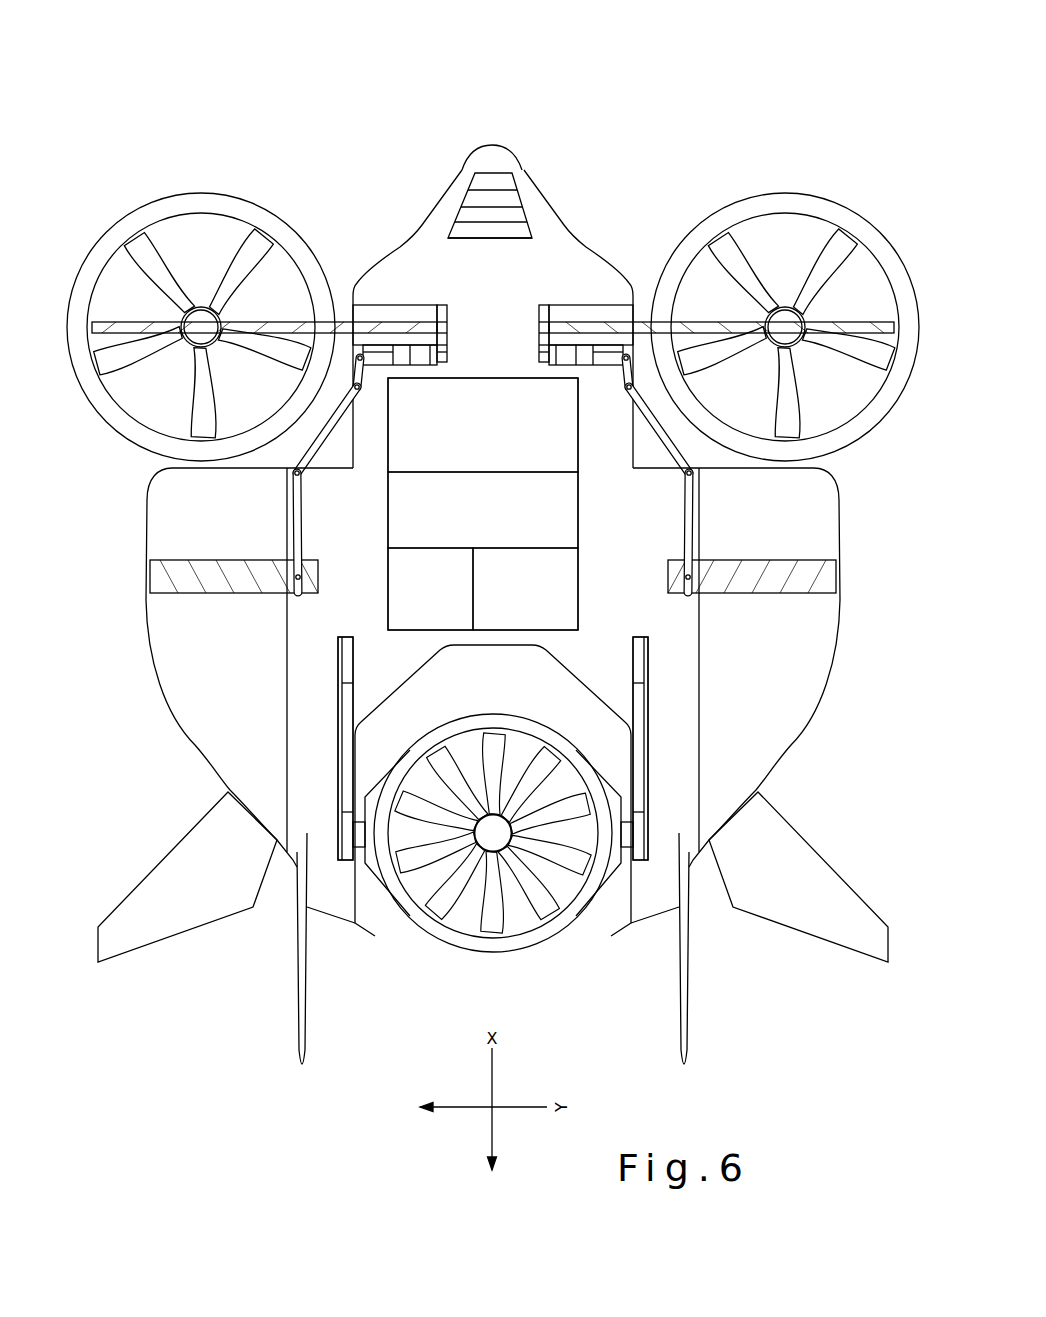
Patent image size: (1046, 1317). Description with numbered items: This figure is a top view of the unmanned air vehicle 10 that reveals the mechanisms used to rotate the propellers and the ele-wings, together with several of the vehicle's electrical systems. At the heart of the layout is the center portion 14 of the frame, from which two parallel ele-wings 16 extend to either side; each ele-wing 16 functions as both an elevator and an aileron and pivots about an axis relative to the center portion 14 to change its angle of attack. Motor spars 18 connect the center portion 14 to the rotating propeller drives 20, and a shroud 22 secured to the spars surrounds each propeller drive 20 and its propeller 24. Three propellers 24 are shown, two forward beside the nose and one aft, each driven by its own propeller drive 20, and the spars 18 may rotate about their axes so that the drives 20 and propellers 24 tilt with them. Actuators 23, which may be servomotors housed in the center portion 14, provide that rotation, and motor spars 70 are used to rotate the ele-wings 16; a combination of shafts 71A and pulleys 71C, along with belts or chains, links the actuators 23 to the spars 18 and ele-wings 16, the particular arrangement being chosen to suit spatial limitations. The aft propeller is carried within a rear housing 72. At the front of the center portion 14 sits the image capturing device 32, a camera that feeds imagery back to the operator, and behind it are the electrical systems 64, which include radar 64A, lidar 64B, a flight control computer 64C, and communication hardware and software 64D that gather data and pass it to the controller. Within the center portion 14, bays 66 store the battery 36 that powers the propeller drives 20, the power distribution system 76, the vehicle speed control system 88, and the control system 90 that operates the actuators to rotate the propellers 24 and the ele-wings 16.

The unmanned air vehicle 10 is at (235, 70).
The center portion 14 is at (565, 248).
The ele-wing 16 is at (190, 712).
The motor spar 18 is at (342, 330).
The propeller drive 20 is at (198, 315).
The shroud 22 is at (170, 208).
The actuator 23 is at (372, 360).
The propeller 24 is at (135, 250).
The image capturing device 32 is at (497, 155).
The battery 36 is at (483, 425).
The electrical systems 64 is at (487, 141).
The radar 64A is at (512, 178).
The lidar 64B is at (520, 196).
The flight control computer 64C is at (463, 213).
The communication hardware/software 64D is at (458, 231).
The bay 66 is at (459, 504).
The motor spar 70 is at (493, 495).
The shaft 71A is at (335, 760).
The pulley 71C is at (357, 392).
The rear fan housing 72 is at (655, 700).
The power distribution system 76 is at (483, 510).
The vehicle speed control system 88 is at (525, 589).
The control system 90 is at (430, 589).